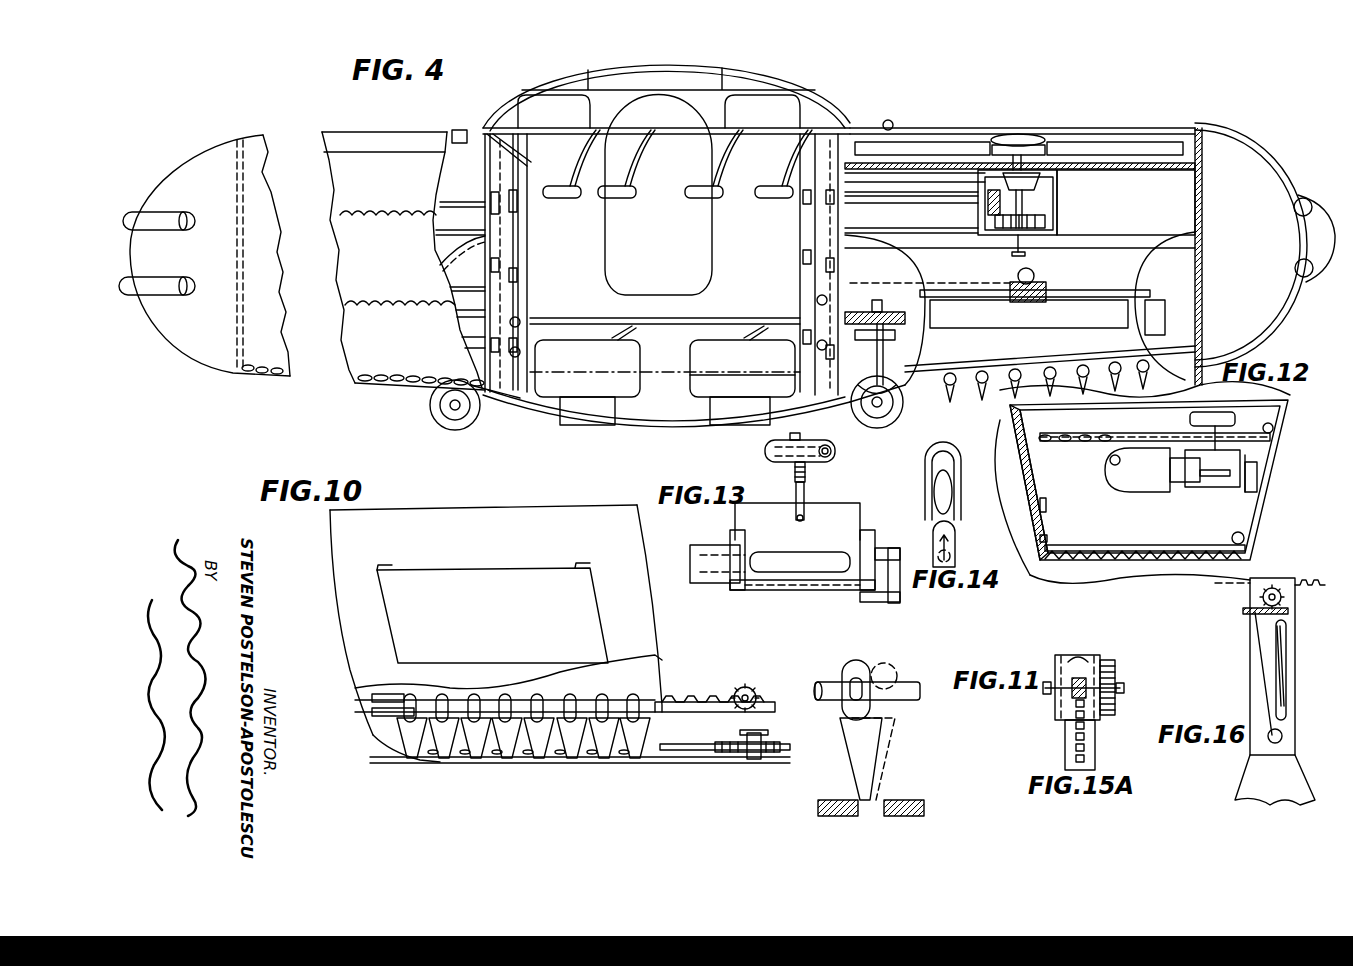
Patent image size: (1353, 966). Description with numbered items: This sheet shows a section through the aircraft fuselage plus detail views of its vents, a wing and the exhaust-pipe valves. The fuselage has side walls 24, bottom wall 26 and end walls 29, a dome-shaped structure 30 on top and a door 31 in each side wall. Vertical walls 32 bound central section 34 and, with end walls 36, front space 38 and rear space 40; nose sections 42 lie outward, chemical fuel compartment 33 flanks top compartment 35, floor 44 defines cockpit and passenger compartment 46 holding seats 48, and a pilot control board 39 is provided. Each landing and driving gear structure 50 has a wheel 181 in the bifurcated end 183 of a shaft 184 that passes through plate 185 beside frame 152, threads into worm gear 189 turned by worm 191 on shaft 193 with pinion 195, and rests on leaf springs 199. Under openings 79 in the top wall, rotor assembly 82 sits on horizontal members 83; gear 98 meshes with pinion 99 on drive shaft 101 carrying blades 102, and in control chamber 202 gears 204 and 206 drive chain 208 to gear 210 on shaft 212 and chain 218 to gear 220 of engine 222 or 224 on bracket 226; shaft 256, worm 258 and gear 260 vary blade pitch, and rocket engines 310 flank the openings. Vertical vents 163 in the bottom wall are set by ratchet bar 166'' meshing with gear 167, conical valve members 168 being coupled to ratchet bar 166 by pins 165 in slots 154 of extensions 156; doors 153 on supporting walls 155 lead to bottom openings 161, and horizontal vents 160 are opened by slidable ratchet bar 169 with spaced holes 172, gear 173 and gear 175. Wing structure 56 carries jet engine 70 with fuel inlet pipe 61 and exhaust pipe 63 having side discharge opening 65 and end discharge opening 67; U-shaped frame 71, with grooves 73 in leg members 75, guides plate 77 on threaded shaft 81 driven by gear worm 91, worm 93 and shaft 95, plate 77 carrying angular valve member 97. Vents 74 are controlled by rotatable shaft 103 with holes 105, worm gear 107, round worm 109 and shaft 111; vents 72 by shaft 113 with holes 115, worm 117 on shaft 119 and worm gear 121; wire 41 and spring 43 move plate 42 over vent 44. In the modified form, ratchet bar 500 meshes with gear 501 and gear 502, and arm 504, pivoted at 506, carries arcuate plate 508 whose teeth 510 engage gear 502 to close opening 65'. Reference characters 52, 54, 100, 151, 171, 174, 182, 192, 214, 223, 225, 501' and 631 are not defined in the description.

In FIG. 4, the side wall 24 is at (258, 360).
In FIG. 4, the bottom wall 26 is at (693, 430).
In FIG. 4, the end wall 29 is at (166, 344).
In FIG. 4, the dome-shaped structure 30 is at (660, 44).
In FIG. 4, the door 31 is at (658, 194).
In FIG. 4, the vertical wall 32 is at (485, 182).
In FIG. 4, the chemical fuel compartment 33 is at (580, 72).
In FIG. 4, the central section 34 is at (665, 310).
In FIG. 4, the top compartment 35 is at (618, 70).
In FIG. 4, the end wall 36 is at (245, 298).
In FIG. 4, the front space 38 is at (460, 218).
In FIG. 4, the pilot control board 39 is at (525, 144).
In FIG. 4, the rear space 40 is at (1126, 202).
In FIG. 12, the wire 41 is at (1048, 540).
In FIG. 4, the nose section 42 is at (202, 358).
In FIG. 12, the nose section 42 is at (1050, 512).
In FIG. 12, the spring 43 is at (1050, 492).
In FIG. 4, the floor 44 is at (696, 318).
In FIG. 4, the combined cockpit and passenger compartment 46 is at (768, 142).
In FIG. 4, the seats 48 is at (645, 166).
In FIG. 4, the landing and driving gear structure 50 is at (436, 428).
In FIG. 4, the tube 52 is at (178, 214).
In FIG. 4, the tube connector 54 is at (188, 233).
In FIG. 12, the wing structure 56 is at (1185, 398).
In FIG. 12, the fuel inlet pipe 61 is at (1120, 464).
In FIG. 12, the exhaust pipe 63 is at (1181, 482).
In FIG. 13, the exhaust pipe 63 is at (712, 572).
In FIG. 14, the exhaust pipe 63 is at (930, 490).
In FIG. 12, the elongated discharge opening 65 is at (1212, 475).
In FIG. 13, the elongated discharge opening 65 is at (800, 579).
In FIG. 15A, the elongated side discharge opening 65' is at (1074, 674).
In FIG. 16, the elongated side discharge opening 65' is at (1302, 670).
In FIG. 12, the discharge opening 67 is at (1272, 470).
In FIG. 13, the discharge opening 67 is at (889, 558).
In FIG. 12, the jet engine 70 is at (1126, 492).
In FIG. 16, the jet engine 70 is at (1300, 794).
In FIG. 12, the U-shaped frame 71 is at (1231, 486).
In FIG. 13, the U-shaped frame 71 is at (772, 586).
In FIG. 14, the U-shaped frame 71 is at (958, 484).
In FIG. 4, the vents 72 is at (370, 215).
In FIG. 12, the vents 72 is at (1100, 432).
In FIG. 13, the grooves 73 is at (861, 536).
In FIG. 4, the vents 74 is at (362, 306).
In FIG. 12, the vents 74 is at (1132, 562).
In FIG. 13, the leg members 75 is at (692, 562).
In FIG. 12, the plate 77 is at (1286, 455).
In FIG. 13, the plate 77 is at (856, 514).
In FIG. 4, the openings 79 is at (352, 130).
In FIG. 13, the threaded shaft 81 is at (795, 476).
In FIG. 4, the rotor assembly 82 is at (1012, 134).
In FIG. 4, the horizontal members 83 is at (450, 166).
In FIG. 13, the gear worm 91 is at (766, 454).
In FIG. 13, the worm 93 is at (836, 452).
In FIG. 13, the shaft 95 is at (823, 460).
In FIG. 12, the angular valve member 97 is at (1266, 492).
In FIG. 13, the angular valve member 97 is at (876, 604).
In FIG. 14, the angular valve member 97 is at (960, 562).
In FIG. 4, the gear 98 is at (1057, 186).
In FIG. 4, the pinion 99 is at (1000, 200).
In FIG. 4, the shaft end 100 is at (1026, 248).
In FIG. 4, the drive shaft 101 is at (456, 200).
In FIG. 4, the blades 102 is at (462, 132).
In FIG. 12, the rotatable shaft 103 is at (1126, 538).
In FIG. 12, the spaced holes 105 is at (1166, 550).
In FIG. 12, the worm gear 107 is at (1228, 549).
In FIG. 12, the round worm 109 is at (1262, 545).
In FIG. 12, the shaft 111 is at (1262, 536).
In FIG. 12, the turnable-rotatable shaft 113 is at (1186, 442).
In FIG. 12, the holes 115 is at (1146, 442).
In FIG. 12, the worm 117 is at (1270, 426).
In FIG. 12, the shaft 119 is at (1331, 375).
In FIG. 12, the worm gear 121 is at (1282, 420).
In FIG. 4, the spike row 151 is at (1030, 380).
In FIG. 4, the frame 152 is at (1152, 248).
In FIG. 4, the doors 153 is at (920, 276).
In FIG. 10, the doors 153 is at (492, 613).
In FIG. 10, the slots 154 is at (530, 702).
In FIG. 11, the slots 154 is at (842, 702).
In FIG. 10, the vertical supporting walls 155 is at (496, 633).
In FIG. 10, the extensions 156 is at (400, 694).
In FIG. 11, the extensions 156 is at (842, 680).
In FIG. 4, the horizontally disposed vents 160 is at (407, 354).
In FIG. 10, the horizontally disposed vents 160 is at (617, 768).
In FIG. 4, the vents 161 is at (362, 386).
In FIG. 10, the vents 161 is at (532, 768).
In FIG. 11, the vents 161 is at (866, 805).
In FIG. 4, the vertically disposed vents 163 is at (380, 392).
In FIG. 10, the pins 165 is at (406, 702).
In FIG. 11, the pins 165 is at (851, 680).
In FIG. 11, the ratchet bar 166 is at (886, 678).
In FIG. 10, the ratchet bar 166'' is at (715, 682).
In FIG. 10, the gear 167 is at (746, 688).
In FIG. 10, the conical shaped valve members 168 is at (412, 733).
In FIG. 11, the conical shaped valve members 168 is at (882, 736).
In FIG. 10, the slidable ratchet bar 169 is at (667, 762).
In FIG. 10, the nut 171 is at (752, 770).
In FIG. 10, the spaced holes 172 is at (418, 770).
In FIG. 10, the gear 173 is at (742, 745).
In FIG. 4, the rod 174 is at (1070, 280).
In FIG. 10, the gear 175 is at (760, 754).
In FIG. 4, the wheel 181 is at (455, 432).
In FIG. 4, the panel 182 is at (1060, 352).
In FIG. 4, the bifurcated end 183 is at (442, 404).
In FIG. 4, the shaft 184 is at (1152, 336).
In FIG. 4, the plate 185 is at (906, 376).
In FIG. 4, the worm gear 189 is at (871, 312).
In FIG. 4, the worm 191 is at (926, 320).
In FIG. 4, the panel 192 is at (977, 358).
In FIG. 4, the shaft 193 is at (816, 302).
In FIG. 4, the pinion 195 is at (816, 312).
In FIG. 4, the leaf springs 199 is at (851, 427).
In FIG. 4, the control chamber 202 is at (528, 264).
In FIG. 4, the gear 204 is at (495, 192).
In FIG. 4, the gear 206 is at (528, 194).
In FIG. 4, the chain 208 is at (442, 266).
In FIG. 4, the gear 210 is at (652, 411).
In FIG. 4, the shaft 212 is at (655, 374).
In FIG. 4, the rail 214 is at (485, 312).
In FIG. 4, the chain 218 is at (800, 216).
In FIG. 4, the gear 220 is at (828, 376).
In FIG. 4, the engine 222 is at (742, 368).
In FIG. 4, the partition 223 is at (742, 380).
In FIG. 4, the engine 224 is at (587, 368).
In FIG. 4, the strut 225 is at (612, 336).
In FIG. 4, the bracket 226 is at (616, 416).
In FIG. 4, the shaft 256 is at (936, 224).
In FIG. 4, the worm 258 is at (1053, 222).
In FIG. 4, the gear 260 is at (1006, 232).
In FIG. 4, the rocket engine 310 is at (440, 128).
In FIG. 15A, the ratchet bar 500 is at (1100, 740).
In FIG. 16, the ratchet bar 500 is at (1306, 586).
In FIG. 15A, the gear 501 is at (1101, 663).
In FIG. 15A, the pin 501' is at (1144, 692).
In FIG. 15A, the gear 502 is at (1120, 690).
In FIG. 16, the gear 502 is at (1285, 598).
In FIG. 16, the arm 504 is at (1256, 682).
In FIG. 16, the pivot 506 is at (1286, 734).
In FIG. 15A, the arcuate shaped plate 508 is at (1116, 670).
In FIG. 16, the arcuate shaped plate 508 is at (1250, 620).
In FIG. 16, the teeth 510 is at (1248, 611).
In FIG. 16, the housing 631 is at (1291, 748).